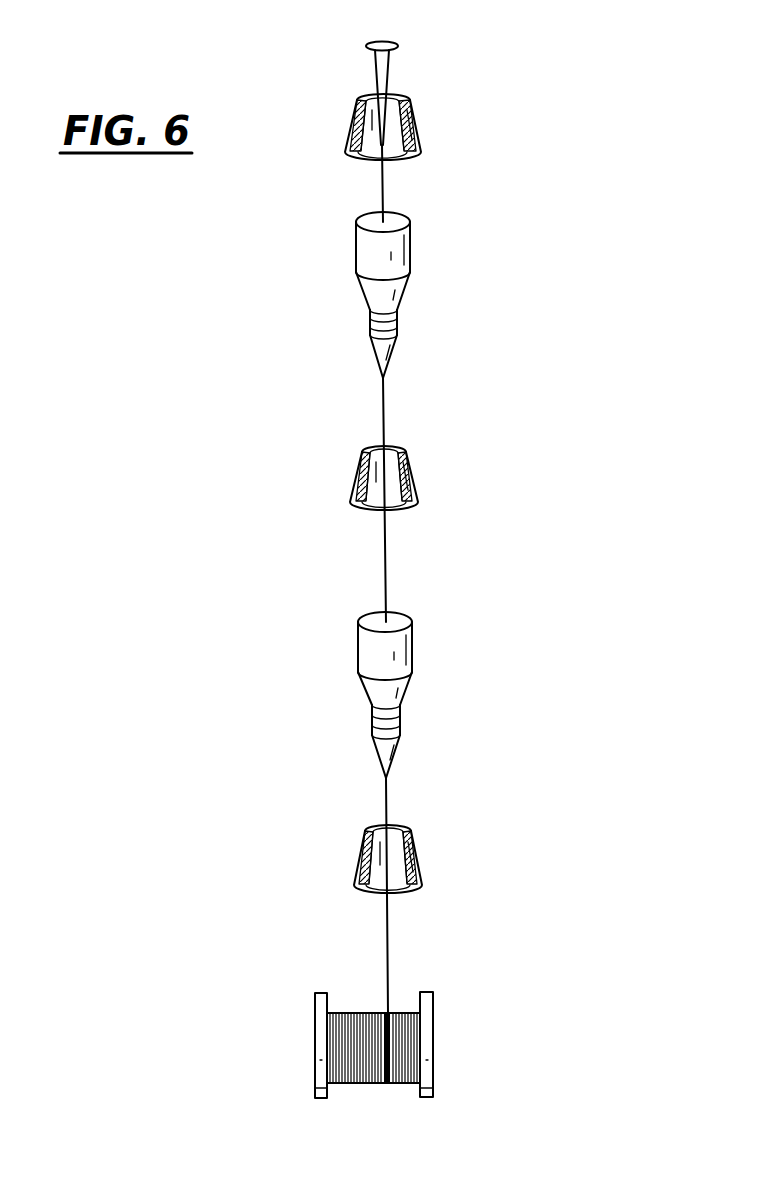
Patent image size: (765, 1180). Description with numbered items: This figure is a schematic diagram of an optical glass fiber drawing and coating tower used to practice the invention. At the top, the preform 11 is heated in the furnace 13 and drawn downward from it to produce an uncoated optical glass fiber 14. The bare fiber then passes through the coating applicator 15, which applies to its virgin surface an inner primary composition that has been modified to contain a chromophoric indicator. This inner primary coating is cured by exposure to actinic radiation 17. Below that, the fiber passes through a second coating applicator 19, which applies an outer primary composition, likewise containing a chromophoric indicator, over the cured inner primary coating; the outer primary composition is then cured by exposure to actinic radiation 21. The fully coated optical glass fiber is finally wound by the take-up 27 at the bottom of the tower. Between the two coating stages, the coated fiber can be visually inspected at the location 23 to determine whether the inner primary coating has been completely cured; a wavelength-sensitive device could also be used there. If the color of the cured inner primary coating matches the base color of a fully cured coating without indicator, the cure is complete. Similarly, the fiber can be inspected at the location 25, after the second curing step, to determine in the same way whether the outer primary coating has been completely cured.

The preform 11 is at (416, 64).
The furnace 13 is at (433, 124).
The uncoated optical glass fiber 14 is at (408, 190).
The coating applicator 15 is at (428, 258).
The actinic radiation 17 is at (433, 467).
The coating applicator 19 is at (430, 660).
The actinic radiation 21 is at (431, 856).
The inspection location 23 is at (371, 564).
The inspection location 25 is at (371, 935).
The take-up 27 is at (445, 1030).